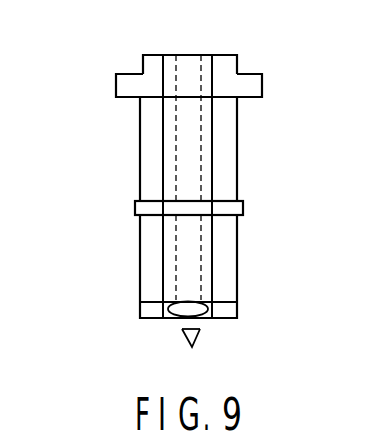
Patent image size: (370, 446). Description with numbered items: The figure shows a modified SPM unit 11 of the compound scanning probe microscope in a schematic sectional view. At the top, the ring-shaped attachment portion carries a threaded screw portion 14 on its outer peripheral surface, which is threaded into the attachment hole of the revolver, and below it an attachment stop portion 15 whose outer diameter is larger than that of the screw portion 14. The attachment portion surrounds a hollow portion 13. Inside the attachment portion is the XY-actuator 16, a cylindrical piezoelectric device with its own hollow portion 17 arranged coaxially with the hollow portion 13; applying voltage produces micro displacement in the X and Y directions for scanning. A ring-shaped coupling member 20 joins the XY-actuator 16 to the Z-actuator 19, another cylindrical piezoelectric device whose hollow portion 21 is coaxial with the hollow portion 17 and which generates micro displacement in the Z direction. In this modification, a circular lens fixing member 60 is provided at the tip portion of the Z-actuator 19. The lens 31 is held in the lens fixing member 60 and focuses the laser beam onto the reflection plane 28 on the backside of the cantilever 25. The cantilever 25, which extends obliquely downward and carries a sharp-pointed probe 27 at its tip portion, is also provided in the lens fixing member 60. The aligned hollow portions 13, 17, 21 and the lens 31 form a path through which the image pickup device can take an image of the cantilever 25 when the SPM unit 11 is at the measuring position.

The SPM unit 11 is at (282, 57).
The hollow portion 13 is at (190, 63).
The screw portion 14 is at (140, 59).
The attachment stop portion 15 is at (116, 84).
The XY-actuator 16 is at (237, 149).
The hollow portion 17 is at (190, 126).
The Z-actuator 19 is at (237, 241).
The coupling member 20 is at (243, 208).
The hollow portion 21 is at (197, 262).
The cantilever 25 is at (193, 334).
The probe 27 is at (197, 333).
The reflection plane 28 is at (182, 326).
The lens 31 is at (178, 307).
The lens fixing member 60 is at (143, 307).